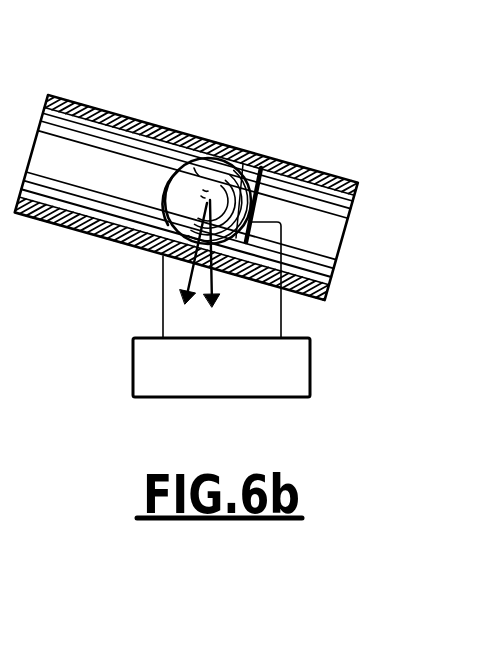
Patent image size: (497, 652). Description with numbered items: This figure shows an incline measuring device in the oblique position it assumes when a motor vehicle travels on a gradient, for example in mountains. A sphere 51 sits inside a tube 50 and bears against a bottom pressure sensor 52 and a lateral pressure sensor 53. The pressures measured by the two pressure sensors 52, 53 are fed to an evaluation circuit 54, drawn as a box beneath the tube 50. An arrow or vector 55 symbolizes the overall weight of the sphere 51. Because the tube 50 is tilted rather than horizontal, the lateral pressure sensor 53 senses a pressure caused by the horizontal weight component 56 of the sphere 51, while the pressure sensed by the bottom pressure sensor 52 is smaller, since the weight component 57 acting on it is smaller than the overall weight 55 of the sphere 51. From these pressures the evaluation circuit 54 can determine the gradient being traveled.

The tube 50 is at (99, 110).
The sphere 51 is at (197, 159).
The bottom pressure sensor 52 is at (132, 247).
The lateral pressure sensor 53 is at (305, 168).
The evaluation circuit 54 is at (221, 309).
The arrow or vector 55 is at (243, 163).
The horizontal weight component 56 is at (198, 305).
The weight component 57 is at (165, 222).